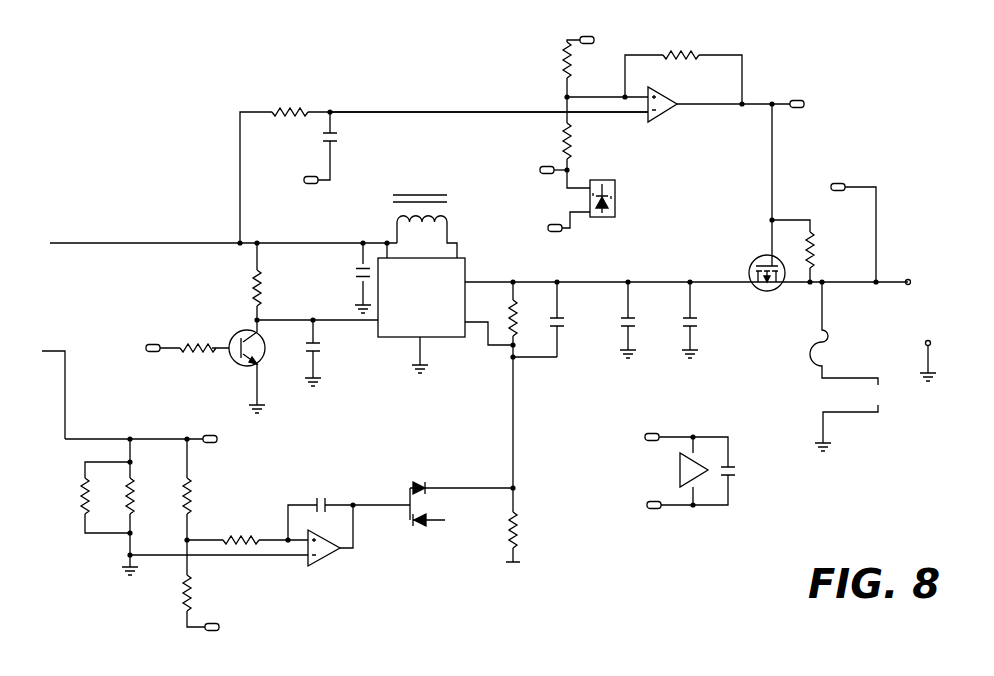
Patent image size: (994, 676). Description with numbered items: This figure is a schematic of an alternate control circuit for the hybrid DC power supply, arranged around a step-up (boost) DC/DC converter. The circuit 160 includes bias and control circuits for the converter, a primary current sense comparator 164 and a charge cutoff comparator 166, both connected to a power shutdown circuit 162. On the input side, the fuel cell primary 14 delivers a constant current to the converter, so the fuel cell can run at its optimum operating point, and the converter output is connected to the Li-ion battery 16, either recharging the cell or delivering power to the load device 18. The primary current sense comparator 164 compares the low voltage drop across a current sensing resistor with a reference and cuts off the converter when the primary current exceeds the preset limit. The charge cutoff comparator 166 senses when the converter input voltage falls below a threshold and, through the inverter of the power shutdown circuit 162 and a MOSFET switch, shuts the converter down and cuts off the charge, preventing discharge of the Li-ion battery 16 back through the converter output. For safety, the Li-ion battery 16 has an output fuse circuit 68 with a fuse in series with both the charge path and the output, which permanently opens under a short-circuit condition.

The circuit 160 is at (178, 98).
The power shutdown circuit 162 is at (370, 377).
The primary current sense comparator 164 is at (432, 573).
The charge cutoff comparator 166 is at (658, 173).
The output fuse circuit 68 is at (787, 351).
The primary 14 is at (60, 367).
The Li-ion battery 16 is at (867, 420).
The load device 18 is at (928, 342).